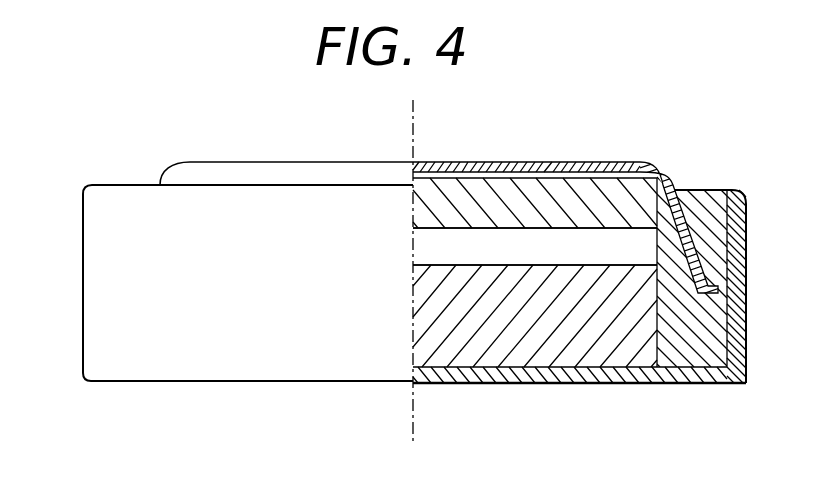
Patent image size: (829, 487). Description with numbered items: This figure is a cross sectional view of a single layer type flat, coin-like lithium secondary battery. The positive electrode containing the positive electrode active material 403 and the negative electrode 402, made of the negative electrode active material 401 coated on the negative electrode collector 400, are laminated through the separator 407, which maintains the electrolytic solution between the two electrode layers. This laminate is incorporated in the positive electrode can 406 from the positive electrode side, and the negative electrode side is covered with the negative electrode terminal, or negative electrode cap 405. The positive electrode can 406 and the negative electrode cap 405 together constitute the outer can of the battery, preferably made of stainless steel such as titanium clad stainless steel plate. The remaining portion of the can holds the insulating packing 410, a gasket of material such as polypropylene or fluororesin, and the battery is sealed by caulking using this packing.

The negative electrode collector 400 is at (548, 173).
The negative electrode active material 401 is at (600, 188).
The negative electrode 402 is at (637, 111).
The positive electrode active material 403 is at (573, 345).
The negative electrode terminal (negative electrode cap) 405 is at (453, 168).
The positive electrode can 406 is at (665, 372).
The separator 407 is at (497, 247).
The insulating packing 410 is at (706, 197).